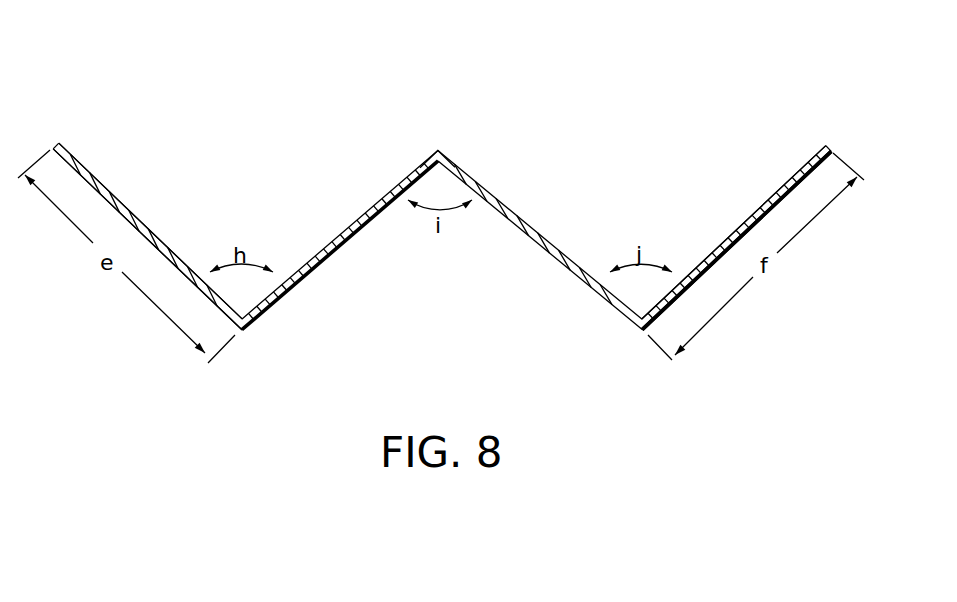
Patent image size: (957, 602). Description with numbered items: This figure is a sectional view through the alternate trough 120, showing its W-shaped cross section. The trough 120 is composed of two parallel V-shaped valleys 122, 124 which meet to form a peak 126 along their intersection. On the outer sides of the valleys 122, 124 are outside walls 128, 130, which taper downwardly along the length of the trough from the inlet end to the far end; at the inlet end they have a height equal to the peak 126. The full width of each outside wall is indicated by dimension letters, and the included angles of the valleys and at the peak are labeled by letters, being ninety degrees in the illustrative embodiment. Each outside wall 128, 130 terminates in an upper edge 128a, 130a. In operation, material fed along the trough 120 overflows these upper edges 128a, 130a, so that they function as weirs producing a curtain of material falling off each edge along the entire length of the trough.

The alternate trough 120 is at (482, 68).
The V-shaped valley 122 is at (227, 170).
The V-shaped valley 124 is at (648, 170).
The peak 126 is at (440, 152).
The outside wall 128 is at (133, 213).
The upper edge 128a is at (57, 143).
The outside wall 130 is at (745, 217).
The upper edge 130a is at (828, 145).